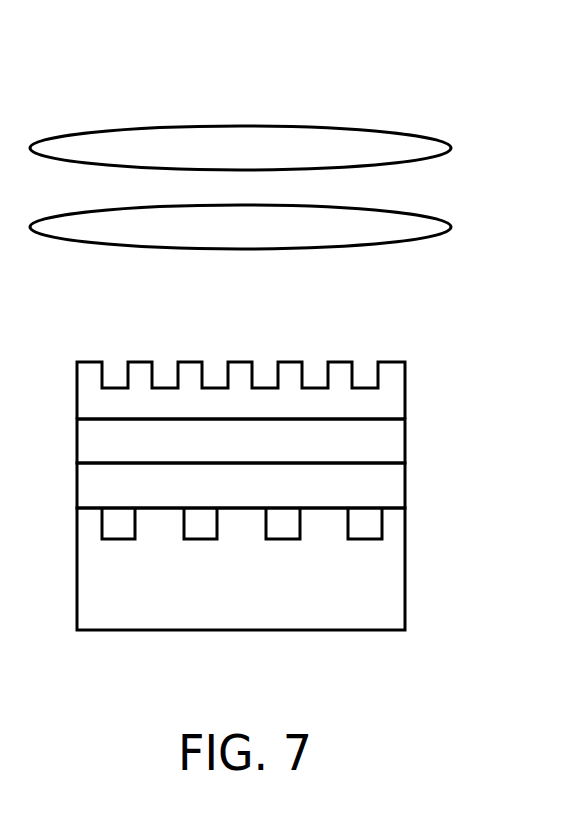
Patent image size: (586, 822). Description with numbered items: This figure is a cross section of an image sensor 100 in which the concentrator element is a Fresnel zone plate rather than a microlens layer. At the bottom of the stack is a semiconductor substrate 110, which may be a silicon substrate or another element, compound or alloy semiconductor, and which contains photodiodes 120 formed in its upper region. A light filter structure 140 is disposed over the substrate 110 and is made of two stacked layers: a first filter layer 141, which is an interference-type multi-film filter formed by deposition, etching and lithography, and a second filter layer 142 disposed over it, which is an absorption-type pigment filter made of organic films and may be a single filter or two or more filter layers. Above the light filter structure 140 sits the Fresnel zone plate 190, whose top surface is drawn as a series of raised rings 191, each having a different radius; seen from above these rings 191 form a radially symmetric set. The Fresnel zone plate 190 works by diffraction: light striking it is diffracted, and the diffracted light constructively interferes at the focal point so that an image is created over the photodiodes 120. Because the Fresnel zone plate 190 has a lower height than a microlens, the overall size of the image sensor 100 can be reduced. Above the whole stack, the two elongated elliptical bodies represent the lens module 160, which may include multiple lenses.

The image sensor 100 is at (57, 95).
The semiconductor substrate 110 is at (385, 584).
The photodiode 120 is at (365, 527).
The light filter structure 140 is at (321, 463).
The first filter layer 141 is at (385, 486).
The second filter layer 142 is at (385, 440).
The lens module 160 is at (454, 186).
The Fresnel zone plate 190 is at (409, 388).
The rings 191 is at (140, 375).